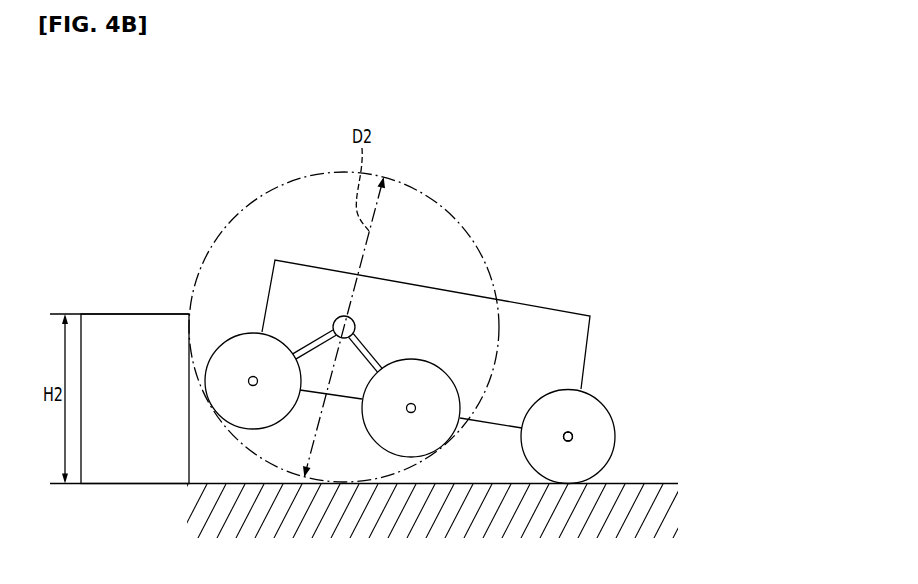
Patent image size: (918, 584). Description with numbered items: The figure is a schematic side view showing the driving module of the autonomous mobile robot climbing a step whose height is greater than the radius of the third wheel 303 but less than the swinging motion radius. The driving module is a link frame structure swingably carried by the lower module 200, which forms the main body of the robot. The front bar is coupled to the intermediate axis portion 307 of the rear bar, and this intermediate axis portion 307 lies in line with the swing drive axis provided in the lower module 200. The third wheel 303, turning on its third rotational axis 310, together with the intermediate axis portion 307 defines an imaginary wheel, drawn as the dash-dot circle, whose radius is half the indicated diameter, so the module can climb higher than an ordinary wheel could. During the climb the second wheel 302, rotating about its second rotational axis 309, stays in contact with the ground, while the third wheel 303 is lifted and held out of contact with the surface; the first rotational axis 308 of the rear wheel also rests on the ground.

The lower module 200 is at (562, 318).
The second wheel 302 is at (438, 393).
The third wheel 303 is at (237, 367).
The intermediate axis portion 307 is at (355, 318).
The first rotational axis 308 is at (574, 435).
The second rotational axis 309 is at (413, 401).
The third rotational axis 310 is at (383, 351).